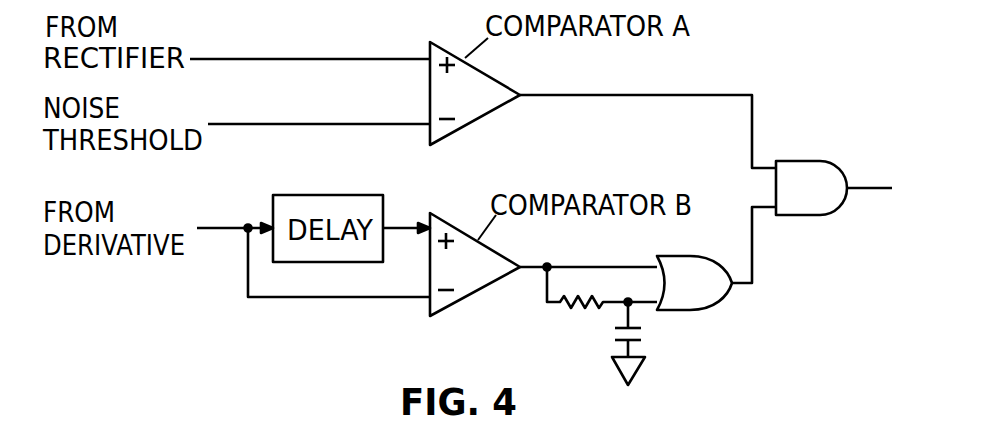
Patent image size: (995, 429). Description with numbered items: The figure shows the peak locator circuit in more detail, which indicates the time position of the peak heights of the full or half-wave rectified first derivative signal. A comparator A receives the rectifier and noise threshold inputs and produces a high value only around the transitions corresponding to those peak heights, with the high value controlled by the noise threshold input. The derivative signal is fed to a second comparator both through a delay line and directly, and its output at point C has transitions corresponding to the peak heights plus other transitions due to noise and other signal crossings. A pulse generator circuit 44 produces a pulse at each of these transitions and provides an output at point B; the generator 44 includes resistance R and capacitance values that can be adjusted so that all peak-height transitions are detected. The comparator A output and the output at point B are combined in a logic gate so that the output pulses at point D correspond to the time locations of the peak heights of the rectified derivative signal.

The pulse generator circuit 44 is at (607, 302).
The comparator A is at (652, 122).
The point B is at (756, 251).
The point C is at (588, 252).
The point D is at (881, 190).
The resistance R is at (602, 305).